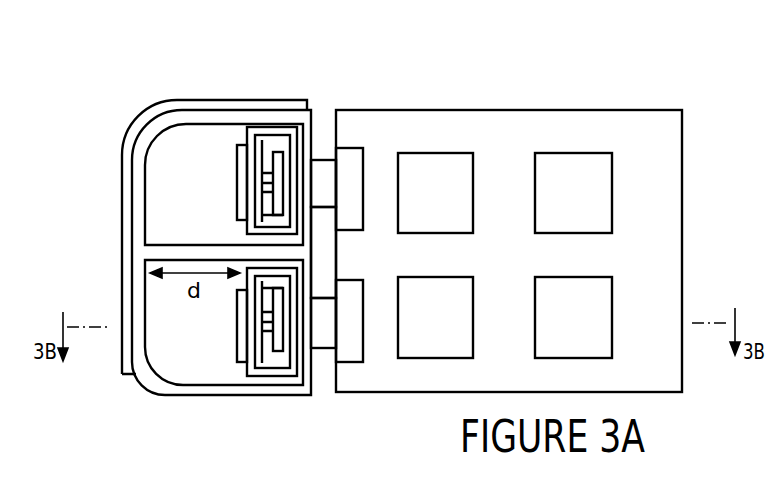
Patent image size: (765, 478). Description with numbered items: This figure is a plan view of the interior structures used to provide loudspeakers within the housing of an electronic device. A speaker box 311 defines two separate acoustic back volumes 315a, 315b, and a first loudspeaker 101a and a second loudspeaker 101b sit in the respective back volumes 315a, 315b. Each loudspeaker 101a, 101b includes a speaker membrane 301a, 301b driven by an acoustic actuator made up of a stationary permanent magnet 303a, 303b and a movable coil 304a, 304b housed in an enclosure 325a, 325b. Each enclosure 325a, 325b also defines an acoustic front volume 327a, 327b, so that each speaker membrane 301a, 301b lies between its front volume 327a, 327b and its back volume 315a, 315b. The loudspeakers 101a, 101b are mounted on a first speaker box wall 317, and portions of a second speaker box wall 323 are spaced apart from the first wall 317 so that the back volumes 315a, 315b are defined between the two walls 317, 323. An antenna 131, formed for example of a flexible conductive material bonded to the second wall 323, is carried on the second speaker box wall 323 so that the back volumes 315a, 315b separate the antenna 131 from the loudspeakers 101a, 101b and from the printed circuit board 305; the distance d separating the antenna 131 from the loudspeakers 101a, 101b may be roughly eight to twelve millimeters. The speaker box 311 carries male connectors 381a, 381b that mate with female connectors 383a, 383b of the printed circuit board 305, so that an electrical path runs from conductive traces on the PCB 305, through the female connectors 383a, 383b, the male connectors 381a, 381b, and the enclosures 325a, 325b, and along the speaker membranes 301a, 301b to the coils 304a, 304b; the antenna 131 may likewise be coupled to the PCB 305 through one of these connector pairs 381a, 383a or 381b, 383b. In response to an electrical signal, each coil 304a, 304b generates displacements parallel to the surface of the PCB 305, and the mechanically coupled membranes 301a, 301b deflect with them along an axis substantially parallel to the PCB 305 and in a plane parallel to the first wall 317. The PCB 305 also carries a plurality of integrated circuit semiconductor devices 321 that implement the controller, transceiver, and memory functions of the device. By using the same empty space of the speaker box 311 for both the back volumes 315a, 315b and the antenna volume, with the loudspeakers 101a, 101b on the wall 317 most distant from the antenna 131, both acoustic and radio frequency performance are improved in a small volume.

The loudspeaker 101a is at (226, 160).
The loudspeaker 101b is at (173, 397).
The antenna 131 is at (122, 368).
The speaker membrane 301a is at (206, 128).
The speaker membrane 301b is at (182, 370).
The stationary permanent magnet 303a is at (280, 157).
The stationary permanent magnet 303b is at (281, 350).
The movable coil 304a is at (263, 172).
The movable coil 304b is at (262, 340).
The printed circuit board 305 is at (668, 148).
The speaker box 311 is at (222, 337).
The acoustic back volume 315a is at (179, 153).
The acoustic back volume 315b is at (173, 353).
The first speaker box wall 317 is at (251, 292).
The integrated circuit semiconductor devices 321 is at (593, 330).
The second speaker box wall 323 is at (207, 292).
The enclosure 325a is at (247, 127).
The enclosure 325b is at (250, 376).
The acoustic front volume 327a is at (265, 215).
The acoustic front volume 327b is at (238, 305).
The male connector 381a is at (323, 158).
The male connector 381b is at (318, 350).
The female connector 383a is at (350, 158).
The female connector 383b is at (363, 315).